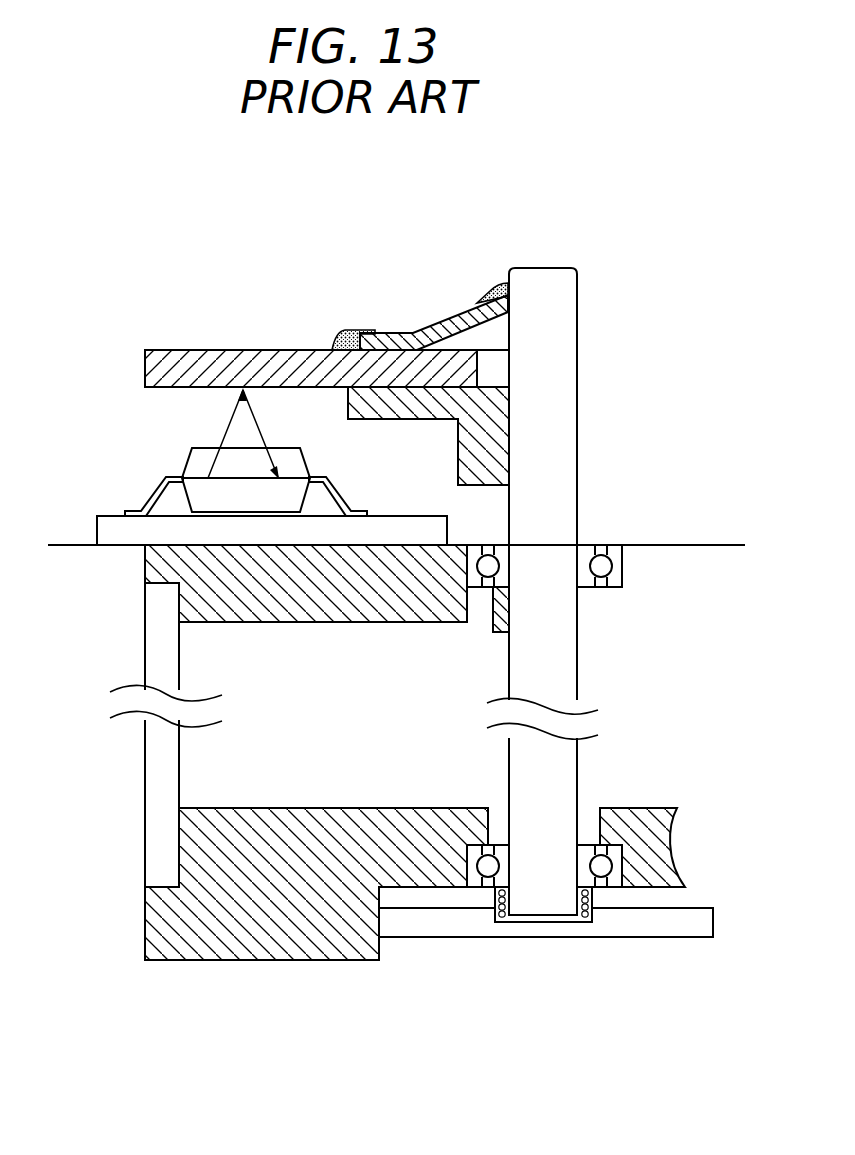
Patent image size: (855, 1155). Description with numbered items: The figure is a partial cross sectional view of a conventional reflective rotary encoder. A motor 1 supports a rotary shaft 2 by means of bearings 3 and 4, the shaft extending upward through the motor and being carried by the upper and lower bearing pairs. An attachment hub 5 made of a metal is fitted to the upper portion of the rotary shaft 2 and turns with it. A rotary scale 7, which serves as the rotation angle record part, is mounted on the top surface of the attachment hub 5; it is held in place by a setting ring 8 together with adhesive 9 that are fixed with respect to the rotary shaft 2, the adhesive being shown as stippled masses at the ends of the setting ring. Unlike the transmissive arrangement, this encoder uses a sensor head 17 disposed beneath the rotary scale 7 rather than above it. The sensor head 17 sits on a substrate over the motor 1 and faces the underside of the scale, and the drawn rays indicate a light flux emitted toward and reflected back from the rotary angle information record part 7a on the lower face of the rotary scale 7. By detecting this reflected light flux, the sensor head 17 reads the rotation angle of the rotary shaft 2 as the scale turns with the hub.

The motor 1 is at (145, 925).
The rotary shaft 2 is at (565, 357).
The bearing 3 is at (622, 572).
The bearing 4 is at (627, 872).
The attachment hub 5 is at (410, 412).
The rotary scale 7 is at (277, 358).
The rotary angle information record part 7a is at (242, 391).
The setting ring 8 is at (442, 321).
The adhesive 9 is at (493, 288).
The sensor head 17 is at (153, 492).